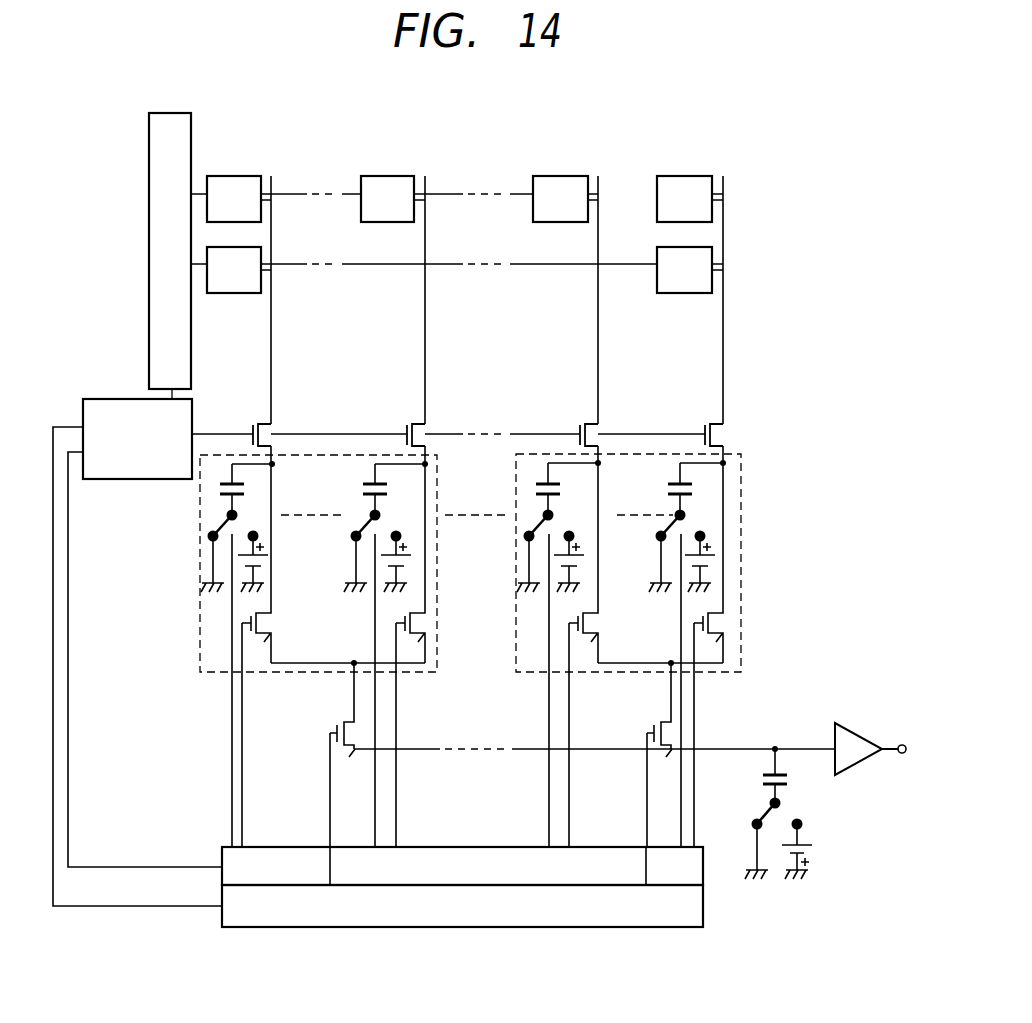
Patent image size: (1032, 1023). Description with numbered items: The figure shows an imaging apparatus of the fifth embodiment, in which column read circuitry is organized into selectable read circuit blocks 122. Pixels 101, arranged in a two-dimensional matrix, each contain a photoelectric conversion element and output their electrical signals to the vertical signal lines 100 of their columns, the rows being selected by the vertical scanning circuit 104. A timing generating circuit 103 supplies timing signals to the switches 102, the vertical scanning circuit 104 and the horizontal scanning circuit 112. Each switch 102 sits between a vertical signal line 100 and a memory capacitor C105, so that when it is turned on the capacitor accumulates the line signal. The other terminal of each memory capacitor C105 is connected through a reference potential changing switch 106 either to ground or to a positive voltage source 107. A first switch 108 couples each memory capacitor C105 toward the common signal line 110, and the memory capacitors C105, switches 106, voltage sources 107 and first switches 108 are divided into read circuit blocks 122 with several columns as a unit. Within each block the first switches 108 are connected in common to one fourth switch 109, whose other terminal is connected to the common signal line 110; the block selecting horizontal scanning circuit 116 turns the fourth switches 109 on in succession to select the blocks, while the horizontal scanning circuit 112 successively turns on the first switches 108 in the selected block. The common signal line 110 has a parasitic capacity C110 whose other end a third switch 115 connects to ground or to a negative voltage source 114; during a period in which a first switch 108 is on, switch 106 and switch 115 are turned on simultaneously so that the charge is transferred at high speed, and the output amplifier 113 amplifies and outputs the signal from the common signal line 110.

The vertical signal line 100 is at (273, 344).
The pixel 101 is at (229, 175).
The switch 102 is at (255, 422).
The timing generating circuit 103 is at (118, 397).
The vertical scanning circuit 104 is at (149, 253).
The memory capacitor C105 is at (692, 490).
The reference potential changing switch 106 is at (205, 519).
The voltage source 107 is at (715, 560).
The first switch 108 is at (252, 633).
The fourth switch 109 is at (338, 723).
The common signal line 110 is at (731, 747).
The horizontal scanning circuit 112 is at (485, 845).
The output amplifier 113 is at (862, 730).
The negative voltage source 114 is at (813, 849).
The third switch 115 is at (778, 817).
The block selecting horizontal scanning circuit 116 is at (482, 930).
The read circuit block 122 is at (224, 673).
The parasitic capacity C110 is at (761, 782).